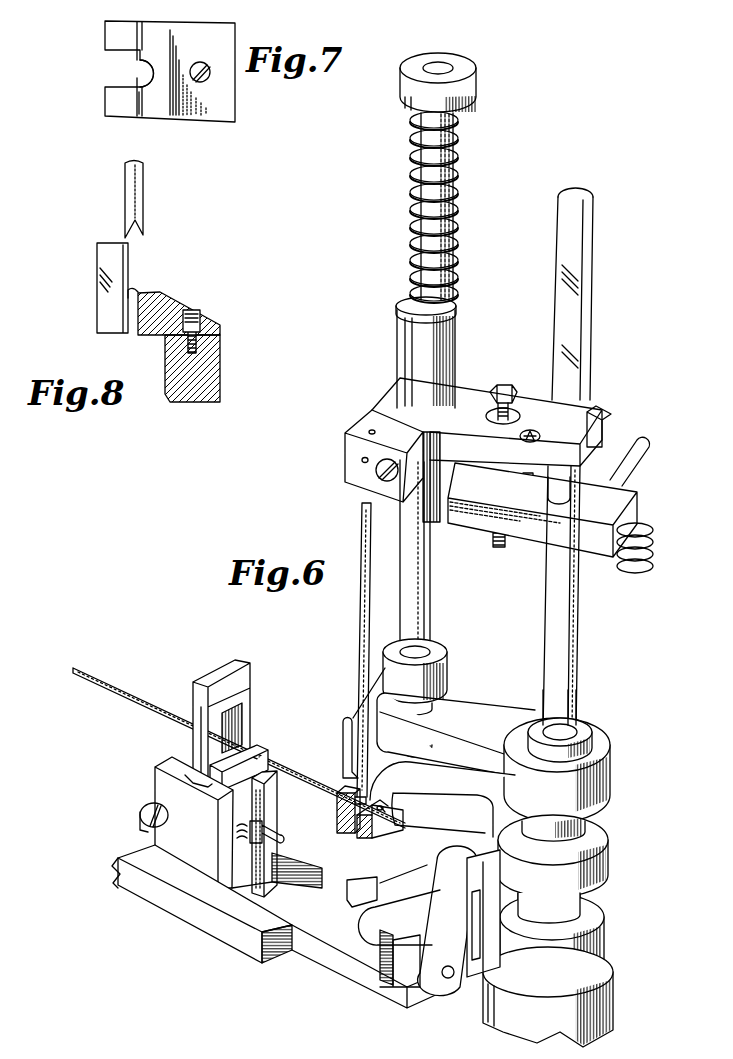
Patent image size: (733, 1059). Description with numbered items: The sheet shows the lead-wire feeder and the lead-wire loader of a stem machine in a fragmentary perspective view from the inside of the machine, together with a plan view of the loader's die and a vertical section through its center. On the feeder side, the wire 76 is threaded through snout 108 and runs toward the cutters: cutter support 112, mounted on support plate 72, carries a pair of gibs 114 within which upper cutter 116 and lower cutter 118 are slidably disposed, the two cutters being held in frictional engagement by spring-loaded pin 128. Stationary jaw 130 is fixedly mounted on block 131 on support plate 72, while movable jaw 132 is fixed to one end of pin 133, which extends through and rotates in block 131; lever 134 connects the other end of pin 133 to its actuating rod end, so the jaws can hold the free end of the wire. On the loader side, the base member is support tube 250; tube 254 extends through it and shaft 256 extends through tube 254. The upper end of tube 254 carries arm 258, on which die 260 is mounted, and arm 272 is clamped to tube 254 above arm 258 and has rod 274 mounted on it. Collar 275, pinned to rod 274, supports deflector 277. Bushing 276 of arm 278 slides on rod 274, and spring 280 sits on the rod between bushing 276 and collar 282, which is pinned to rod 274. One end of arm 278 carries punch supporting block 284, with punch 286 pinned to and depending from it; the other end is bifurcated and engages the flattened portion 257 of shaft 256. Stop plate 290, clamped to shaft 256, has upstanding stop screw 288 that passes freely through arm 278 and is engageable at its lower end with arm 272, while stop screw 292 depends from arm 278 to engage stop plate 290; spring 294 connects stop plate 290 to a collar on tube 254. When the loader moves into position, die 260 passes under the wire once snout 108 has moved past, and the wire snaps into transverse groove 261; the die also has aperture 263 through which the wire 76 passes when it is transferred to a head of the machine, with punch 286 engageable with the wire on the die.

In FIG. 6, the support plate 72 is at (196, 920).
In FIG. 8, the wire 76 is at (137, 291).
In FIG. 6, the wire 76 is at (418, 856).
In FIG. 6, the snout 108 is at (106, 683).
In FIG. 6, the cutter support 112 is at (166, 767).
In FIG. 6, the gibs 114 is at (160, 833).
In FIG. 6, the upper cutter 116 is at (200, 672).
In FIG. 6, the lower cutter 118 is at (248, 752).
In FIG. 6, the spring-loaded pin 128 is at (280, 833).
In FIG. 6, the stationary jaw 130 is at (490, 963).
In FIG. 6, the block 131 is at (395, 960).
In FIG. 6, the movable jaw 132 is at (428, 966).
In FIG. 6, the pin 133 is at (446, 979).
In FIG. 6, the lever 134 is at (366, 920).
In FIG. 6, the support tube 250 is at (602, 996).
In FIG. 6, the tube 254 is at (582, 733).
In FIG. 6, the shaft 256 is at (578, 641).
In FIG. 6, the flattened portion 257 is at (576, 316).
In FIG. 8, the arm 258 is at (210, 362).
In FIG. 6, the arm 258 is at (398, 820).
In FIG. 7, the die 260 is at (222, 108).
In FIG. 8, the die 260 is at (166, 303).
In FIG. 6, the die 260 is at (338, 795).
In FIG. 7, the transverse groove 261 is at (141, 117).
In FIG. 7, the aperture 263 is at (140, 72).
In FIG. 8, the aperture 263 is at (126, 336).
In FIG. 6, the aperture 263 is at (362, 838).
In FIG. 6, the arm 272 is at (472, 702).
In FIG. 6, the rod 274 is at (431, 610).
In FIG. 6, the collar 275 is at (447, 656).
In FIG. 6, the bushing 276 is at (450, 330).
In FIG. 6, the deflector 277 is at (345, 714).
In FIG. 6, the arm 278 is at (388, 404).
In FIG. 6, the spring 280 is at (459, 197).
In FIG. 6, the collar 282 is at (478, 90).
In FIG. 6, the punch supporting block 284 is at (348, 450).
In FIG. 8, the punch 286 is at (128, 193).
In FIG. 6, the punch 286 is at (360, 639).
In FIG. 6, the stop screw 288 is at (501, 390).
In FIG. 6, the stop plate 290 is at (531, 536).
In FIG. 6, the stop screw 292 is at (532, 438).
In FIG. 6, the spring 294 is at (651, 562).